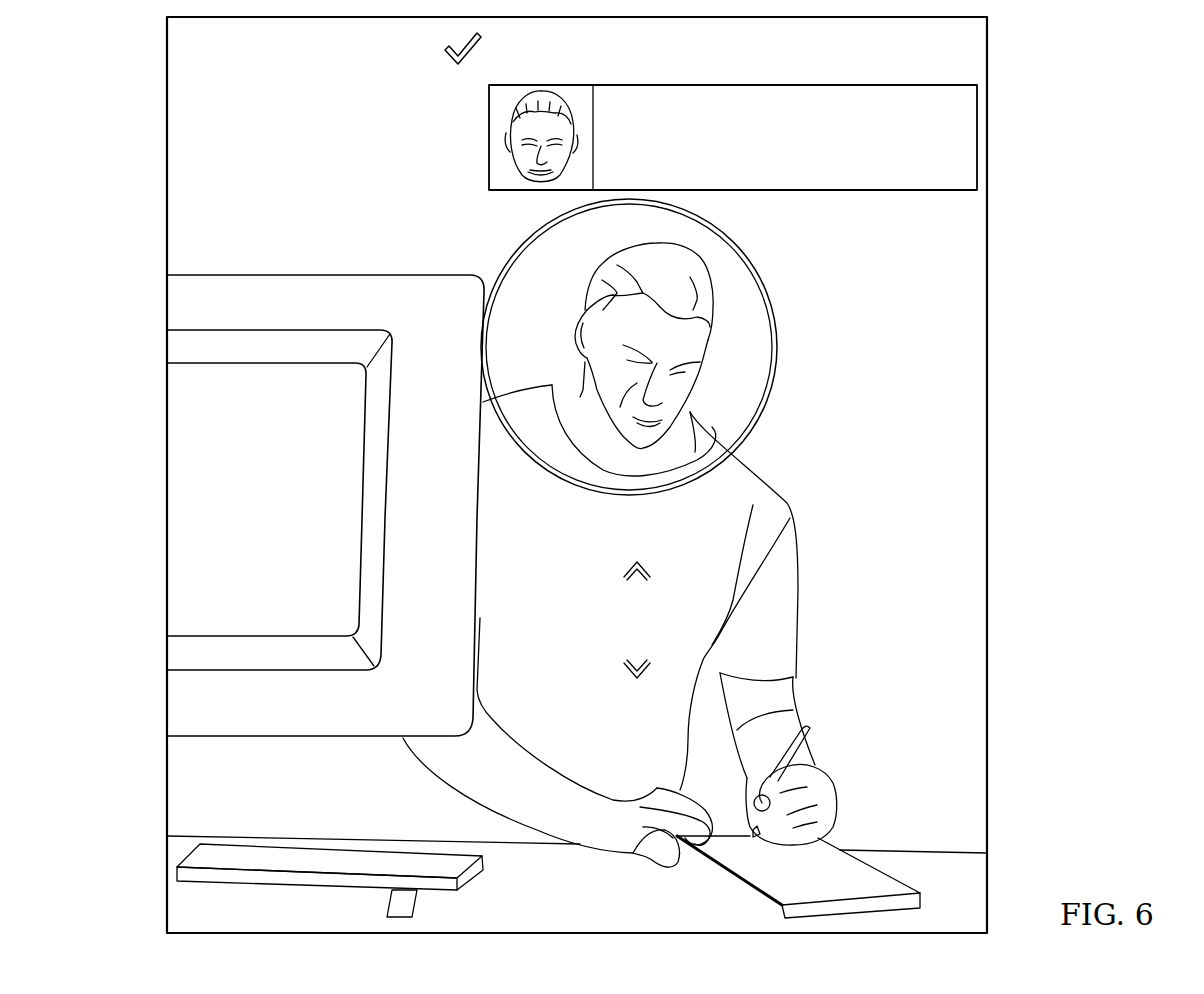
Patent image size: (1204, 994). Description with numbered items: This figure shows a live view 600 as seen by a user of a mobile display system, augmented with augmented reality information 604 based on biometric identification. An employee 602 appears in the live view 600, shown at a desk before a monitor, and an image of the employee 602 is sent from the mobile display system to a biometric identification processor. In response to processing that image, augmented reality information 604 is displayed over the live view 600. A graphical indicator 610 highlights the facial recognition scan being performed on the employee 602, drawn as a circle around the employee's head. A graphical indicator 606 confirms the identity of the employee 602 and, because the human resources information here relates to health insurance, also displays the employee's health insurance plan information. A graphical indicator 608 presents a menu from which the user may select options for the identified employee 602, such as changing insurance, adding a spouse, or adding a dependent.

The live view 600 is at (403, 193).
The employee 602 is at (798, 553).
The augmented reality information 604 is at (810, 190).
The graphical indicator 606 is at (767, 43).
The graphical indicator 608 is at (672, 562).
The graphical indicator 610 is at (702, 353).